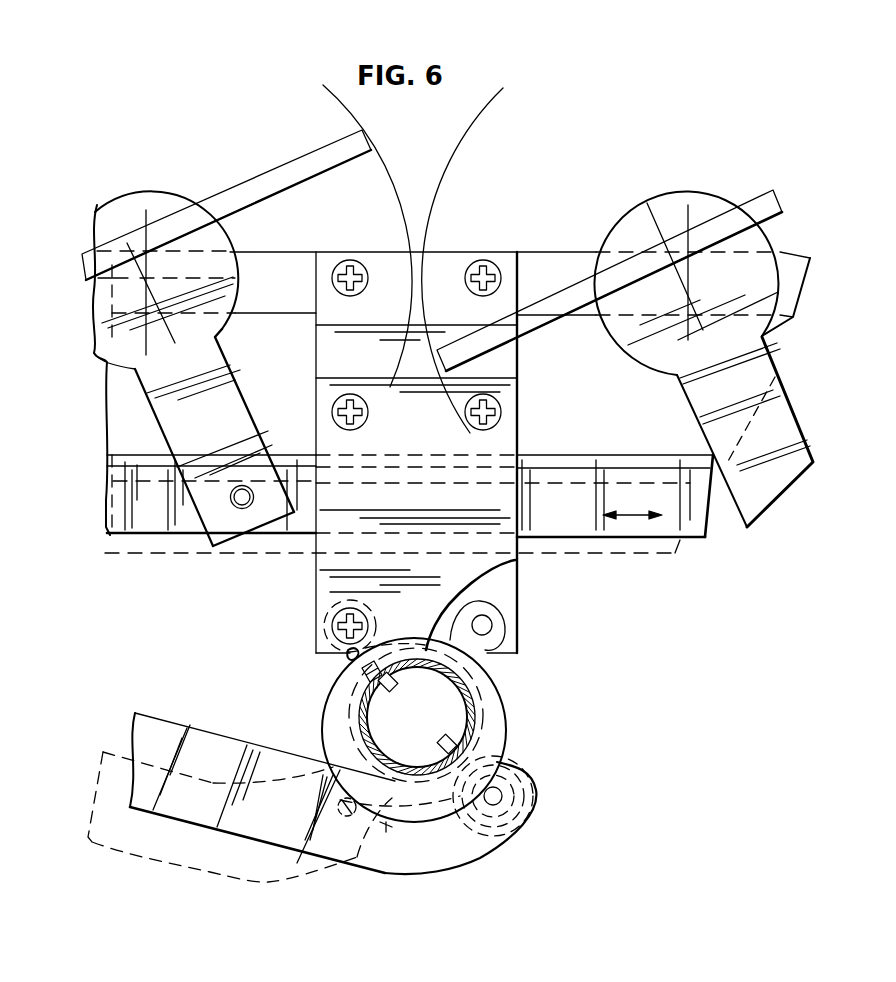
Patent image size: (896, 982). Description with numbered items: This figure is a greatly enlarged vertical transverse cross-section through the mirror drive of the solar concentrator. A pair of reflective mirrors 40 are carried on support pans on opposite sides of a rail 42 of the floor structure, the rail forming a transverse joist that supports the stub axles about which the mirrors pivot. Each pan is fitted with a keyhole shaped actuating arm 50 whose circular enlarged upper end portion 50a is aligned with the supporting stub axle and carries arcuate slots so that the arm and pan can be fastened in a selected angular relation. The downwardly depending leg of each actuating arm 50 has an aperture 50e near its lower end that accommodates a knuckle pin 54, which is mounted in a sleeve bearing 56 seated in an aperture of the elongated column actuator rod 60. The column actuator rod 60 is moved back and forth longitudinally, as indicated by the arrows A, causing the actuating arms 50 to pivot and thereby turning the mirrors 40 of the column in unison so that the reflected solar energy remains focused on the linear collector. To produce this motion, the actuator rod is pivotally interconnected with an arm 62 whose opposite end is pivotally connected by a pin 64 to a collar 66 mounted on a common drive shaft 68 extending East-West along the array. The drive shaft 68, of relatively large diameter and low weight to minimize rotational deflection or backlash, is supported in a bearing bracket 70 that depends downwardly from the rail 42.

The reflective mirror 40 is at (248, 178).
The enlarged upper end portion 50a is at (227, 237).
The actuating arm 50 is at (218, 362).
The rail 42 is at (593, 401).
The sleeve bearing 56 is at (250, 487).
The knuckle pin 54 is at (238, 507).
The aperture 50e is at (250, 516).
The column actuator rod 60 is at (298, 533).
The bearing bracket 70 is at (505, 593).
The drive shaft 68 is at (463, 697).
The collar 66 is at (498, 737).
The pin 64 is at (500, 793).
The arm 62 is at (420, 857).
The arrows A is at (633, 517).